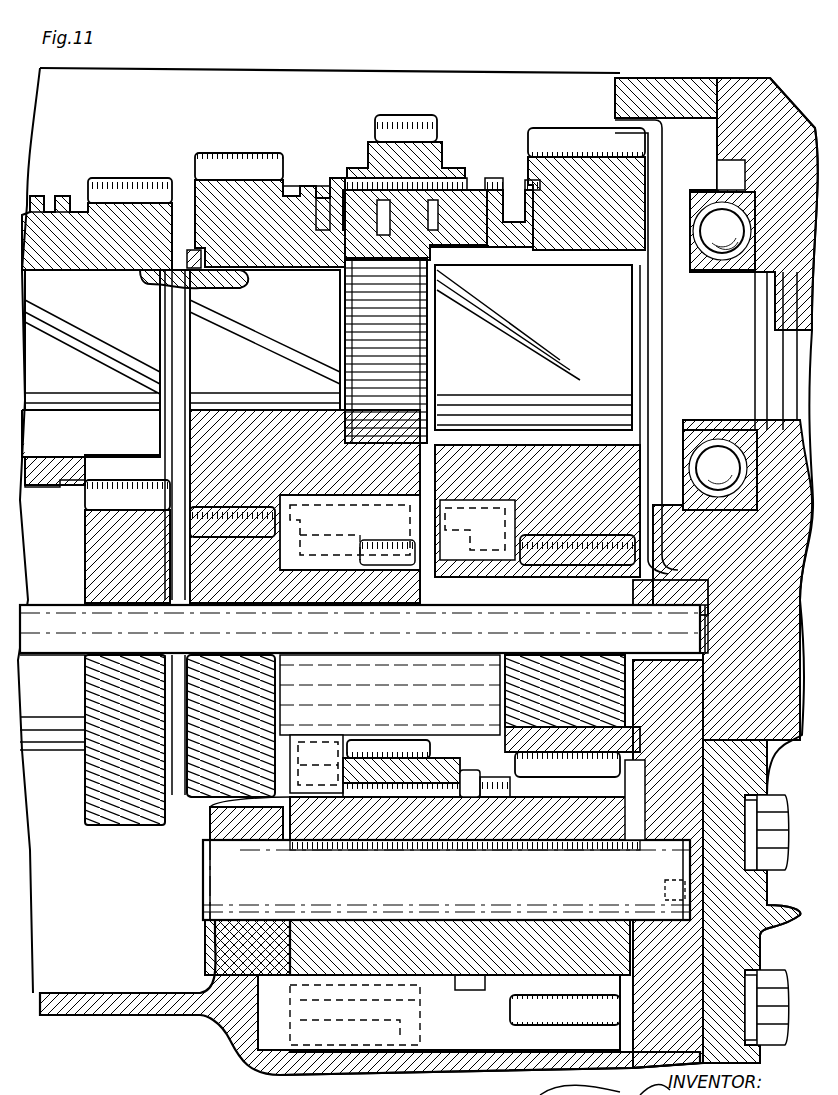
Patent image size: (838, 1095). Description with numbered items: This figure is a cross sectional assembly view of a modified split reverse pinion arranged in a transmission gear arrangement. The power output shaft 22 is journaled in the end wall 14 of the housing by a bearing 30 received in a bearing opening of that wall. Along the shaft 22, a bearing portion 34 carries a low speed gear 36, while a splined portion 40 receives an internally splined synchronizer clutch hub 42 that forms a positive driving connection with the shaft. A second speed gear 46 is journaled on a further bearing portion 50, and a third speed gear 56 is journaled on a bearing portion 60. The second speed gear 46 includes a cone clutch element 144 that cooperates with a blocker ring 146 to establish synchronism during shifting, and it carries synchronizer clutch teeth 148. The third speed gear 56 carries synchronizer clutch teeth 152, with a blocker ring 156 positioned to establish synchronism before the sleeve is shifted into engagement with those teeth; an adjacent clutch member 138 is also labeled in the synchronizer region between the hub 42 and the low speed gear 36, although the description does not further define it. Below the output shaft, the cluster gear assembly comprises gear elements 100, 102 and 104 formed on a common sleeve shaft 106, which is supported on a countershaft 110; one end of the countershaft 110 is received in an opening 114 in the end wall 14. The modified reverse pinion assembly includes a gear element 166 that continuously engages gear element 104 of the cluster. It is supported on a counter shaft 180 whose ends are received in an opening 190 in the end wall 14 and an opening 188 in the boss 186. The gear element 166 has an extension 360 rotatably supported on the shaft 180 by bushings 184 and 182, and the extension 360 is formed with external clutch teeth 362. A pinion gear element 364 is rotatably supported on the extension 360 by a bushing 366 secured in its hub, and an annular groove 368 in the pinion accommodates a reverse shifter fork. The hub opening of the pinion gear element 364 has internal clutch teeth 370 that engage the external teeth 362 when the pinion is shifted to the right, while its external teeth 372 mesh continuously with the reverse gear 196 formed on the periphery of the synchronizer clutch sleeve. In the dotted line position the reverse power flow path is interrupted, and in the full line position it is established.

The end wall 14 is at (738, 604).
The power output shaft 22 is at (786, 296).
The bearing 30 is at (757, 232).
The bearing portion 34 is at (633, 312).
The low speed gear 36 is at (555, 137).
The splined portion 40 is at (415, 338).
The synchronizer clutch hub 42 is at (438, 263).
The second speed gear 46 is at (213, 162).
The bearing portion 50 is at (197, 328).
The third speed gear 56 is at (100, 185).
The bearing portion 60 is at (85, 450).
The gear element 100 is at (92, 812).
The gear element 102 is at (272, 666).
The gear element 104 is at (486, 833).
The sleeve shaft 106 is at (462, 595).
The countershaft 110 is at (708, 640).
The opening 114 is at (718, 644).
The clutch member 138 is at (455, 188).
The cone clutch element 144 is at (326, 185).
The blocker ring 146 is at (330, 215).
The synchronizer clutch teeth 148 is at (292, 188).
The synchronizer clutch teeth 152 is at (38, 195).
The blocker ring 156 is at (62, 195).
The gear element 166 is at (633, 792).
The counter shaft 180 is at (207, 851).
The bushing 182 is at (560, 843).
The bushing 184 is at (344, 844).
The boss 186 is at (215, 936).
The opening 188 is at (206, 908).
The opening 190 is at (658, 848).
The reverse gear 196 is at (408, 583).
The extension 360 is at (440, 838).
The clutch teeth 362 is at (480, 992).
The pinion gear element 364 is at (398, 760).
The bushing 366 is at (396, 843).
The annular groove 368 is at (433, 760).
The internal clutch teeth 370 is at (474, 834).
The external teeth 372 is at (352, 748).